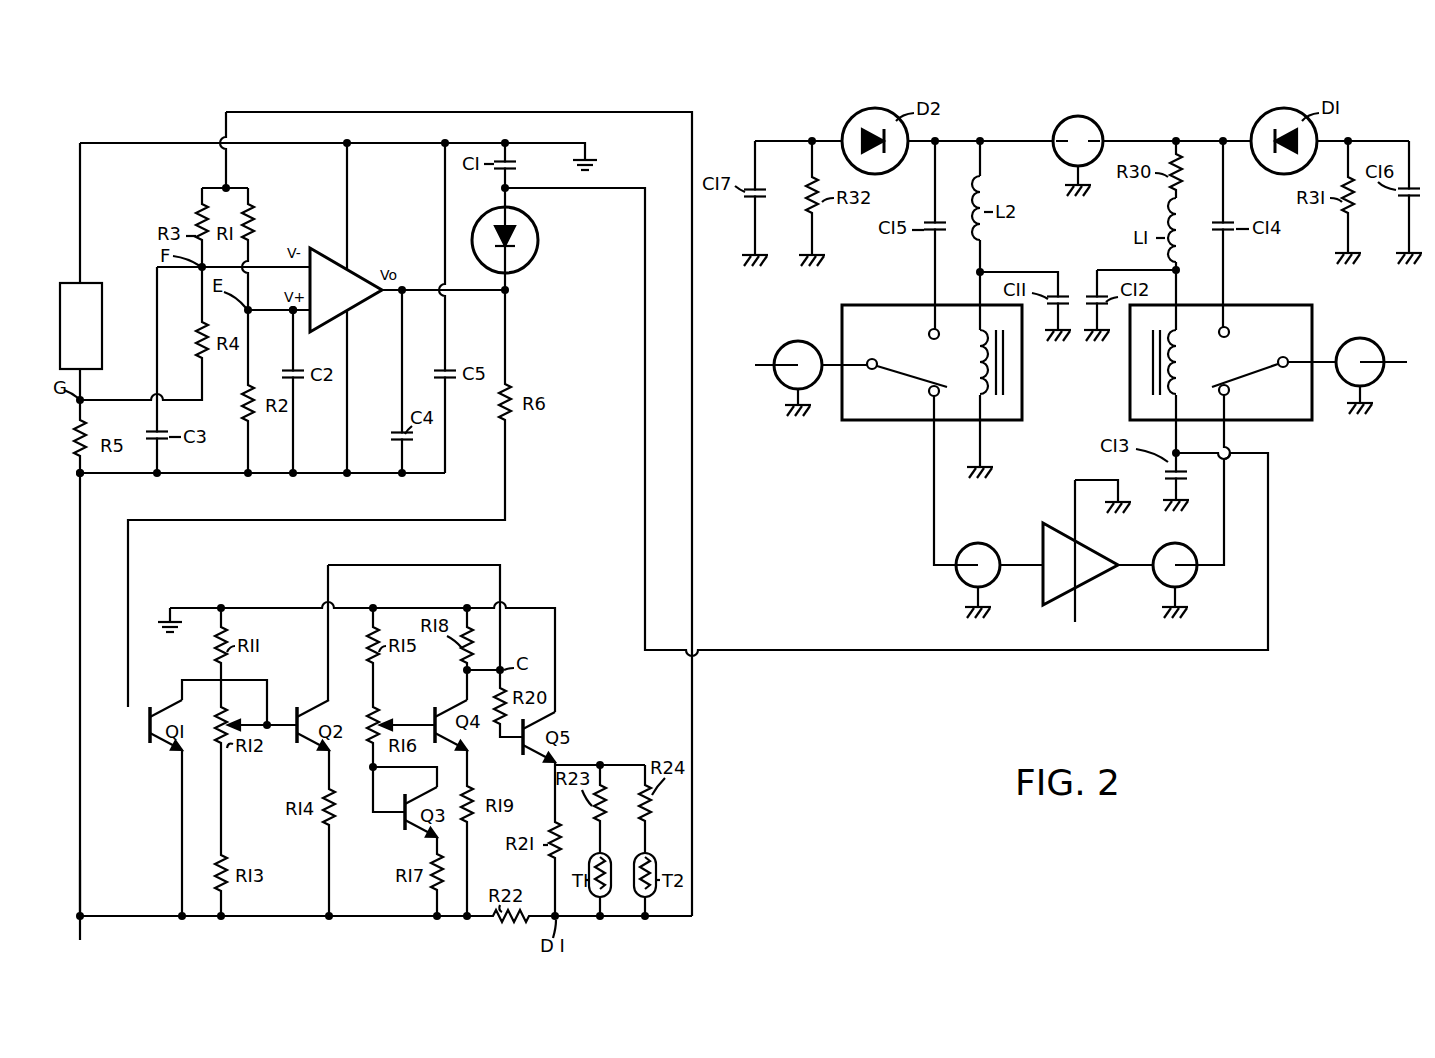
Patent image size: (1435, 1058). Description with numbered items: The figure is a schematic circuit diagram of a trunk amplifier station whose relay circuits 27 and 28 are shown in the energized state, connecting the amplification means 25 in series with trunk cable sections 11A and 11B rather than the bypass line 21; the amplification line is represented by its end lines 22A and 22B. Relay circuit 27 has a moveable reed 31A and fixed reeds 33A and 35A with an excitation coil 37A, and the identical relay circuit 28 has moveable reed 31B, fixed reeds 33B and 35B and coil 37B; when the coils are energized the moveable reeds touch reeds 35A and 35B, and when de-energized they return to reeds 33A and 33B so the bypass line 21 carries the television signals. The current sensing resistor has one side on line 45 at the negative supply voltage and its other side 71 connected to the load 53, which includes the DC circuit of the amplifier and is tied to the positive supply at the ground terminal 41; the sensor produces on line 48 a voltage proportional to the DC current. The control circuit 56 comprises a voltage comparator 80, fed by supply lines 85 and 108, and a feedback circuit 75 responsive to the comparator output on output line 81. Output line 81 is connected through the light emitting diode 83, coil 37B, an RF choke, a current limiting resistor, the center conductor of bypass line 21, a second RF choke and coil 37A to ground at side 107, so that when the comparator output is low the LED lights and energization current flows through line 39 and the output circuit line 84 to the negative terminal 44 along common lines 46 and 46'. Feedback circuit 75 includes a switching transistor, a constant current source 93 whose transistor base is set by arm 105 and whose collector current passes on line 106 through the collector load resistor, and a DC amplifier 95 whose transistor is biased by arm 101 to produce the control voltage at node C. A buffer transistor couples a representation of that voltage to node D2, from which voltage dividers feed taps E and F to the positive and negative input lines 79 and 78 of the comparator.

The supply line 108 is at (533, 112).
The positive terminal 41 is at (590, 158).
The load 53 is at (103, 310).
The other side of current sensing resistor 71 is at (85, 410).
The line 48 is at (118, 399).
The negative input line 78 is at (257, 263).
The positive input line 79 is at (256, 308).
The voltage comparator 80 is at (345, 264).
The supply line 85 is at (347, 177).
The output circuit line 84 is at (349, 358).
The output line 81 is at (405, 285).
The line 45 is at (78, 471).
The light emitting diode 83 is at (537, 250).
The line 39 is at (742, 650).
The feedback circuit 75 is at (535, 562).
The line 106 is at (365, 565).
The arm of potentiometer R12 105 is at (262, 722).
The arm of potentiometer R16 101 is at (425, 720).
The common line 46 is at (386, 928).
The negative terminal 44 is at (85, 930).
The common line 46' is at (103, 888).
The constant current source 93 is at (262, 946).
The DC amplifier 95 is at (444, 946).
The control circuit 56 is at (718, 95).
The bypass line 21 is at (1019, 139).
The relay circuit 27 is at (886, 422).
The fixed reed contact 33A is at (928, 336).
The moveable reed contact 31A is at (900, 370).
The fixed reed contact 35A is at (928, 393).
The excitation coil 37A is at (1010, 365).
The side of relay coil 107 is at (986, 460).
The line section 11A is at (762, 361).
The relay circuit 28 is at (1270, 422).
The excitation coil 37B is at (1148, 372).
The fixed reed contact 33B is at (1229, 334).
The moveable reed contact 31B is at (1266, 369).
The fixed reed contact 35B is at (1229, 393).
The line section 11B is at (1400, 362).
The amplifier output line 22B is at (1222, 503).
The amplifier input line 22A is at (932, 562).
The amplification means 25 is at (1040, 535).
The node D2 is at (228, 186).